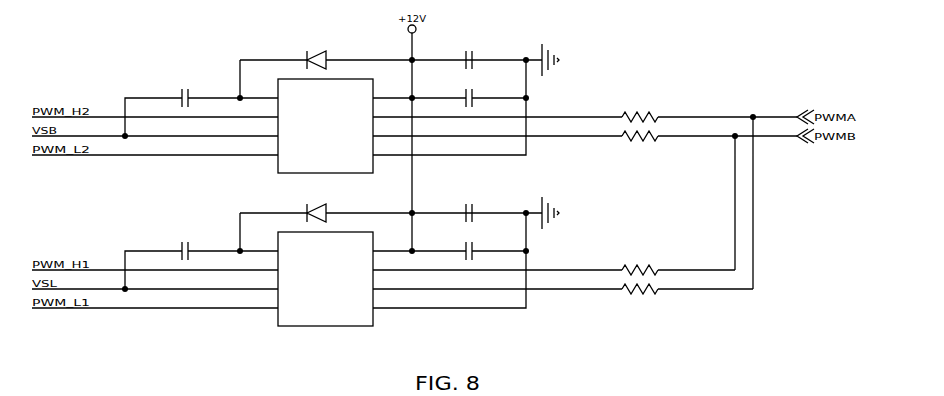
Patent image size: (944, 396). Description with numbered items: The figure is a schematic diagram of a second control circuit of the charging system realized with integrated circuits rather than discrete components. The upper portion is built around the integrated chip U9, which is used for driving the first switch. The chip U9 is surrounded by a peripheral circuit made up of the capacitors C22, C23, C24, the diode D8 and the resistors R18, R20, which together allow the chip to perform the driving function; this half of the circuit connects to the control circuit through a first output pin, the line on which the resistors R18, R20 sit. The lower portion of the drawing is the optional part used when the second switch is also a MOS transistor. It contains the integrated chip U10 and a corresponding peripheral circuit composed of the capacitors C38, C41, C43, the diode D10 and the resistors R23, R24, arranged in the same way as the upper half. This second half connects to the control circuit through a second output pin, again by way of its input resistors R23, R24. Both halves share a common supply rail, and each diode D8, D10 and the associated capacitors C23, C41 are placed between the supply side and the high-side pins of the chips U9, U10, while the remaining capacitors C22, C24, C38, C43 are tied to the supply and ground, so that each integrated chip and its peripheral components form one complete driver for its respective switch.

The integrated chip U9 is at (325, 135).
The integrated chip U10 is at (325, 289).
The diode D8 is at (302, 58).
The diode D10 is at (300, 211).
The capacitor C22 is at (454, 58).
The capacitor C23 is at (170, 96).
The capacitor C24 is at (454, 96).
The capacitor C38 is at (454, 211).
The capacitor C41 is at (170, 249).
The capacitor C43 is at (454, 249).
The resistor R18 is at (629, 113).
The resistor R20 is at (629, 132).
The resistor R23 is at (629, 266).
The resistor R24 is at (629, 285).